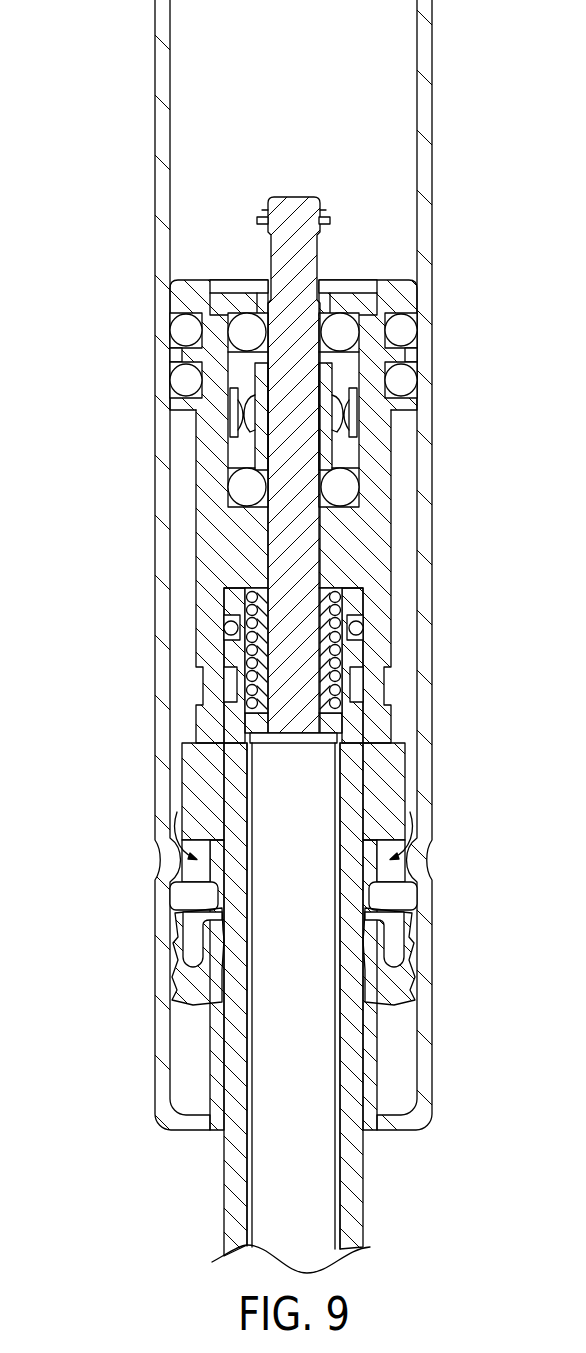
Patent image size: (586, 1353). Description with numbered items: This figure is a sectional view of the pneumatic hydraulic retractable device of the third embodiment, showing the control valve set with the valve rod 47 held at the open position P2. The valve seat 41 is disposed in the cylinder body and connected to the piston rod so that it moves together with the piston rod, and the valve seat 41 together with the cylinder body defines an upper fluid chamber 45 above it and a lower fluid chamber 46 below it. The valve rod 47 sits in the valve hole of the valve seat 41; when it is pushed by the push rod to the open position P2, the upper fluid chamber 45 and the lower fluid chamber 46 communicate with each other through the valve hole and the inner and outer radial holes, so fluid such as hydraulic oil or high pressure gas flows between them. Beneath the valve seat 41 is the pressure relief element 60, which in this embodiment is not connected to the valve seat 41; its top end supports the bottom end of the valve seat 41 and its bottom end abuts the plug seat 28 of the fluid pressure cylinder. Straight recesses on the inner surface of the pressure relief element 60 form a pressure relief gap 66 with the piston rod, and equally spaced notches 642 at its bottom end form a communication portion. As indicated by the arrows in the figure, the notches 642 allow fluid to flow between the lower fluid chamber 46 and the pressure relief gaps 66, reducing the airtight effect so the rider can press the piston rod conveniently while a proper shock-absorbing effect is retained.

The upper fluid chamber 45 is at (216, 125).
The valve rod 47 is at (292, 260).
The open position P2 is at (325, 190).
The lower fluid chamber 46 is at (184, 458).
The valve seat 41 is at (230, 545).
The pressure relief element 60 is at (198, 747).
The pressure relief gap 66 is at (217, 850).
The notch 642 is at (197, 872).
The plug seat 28 is at (188, 898).